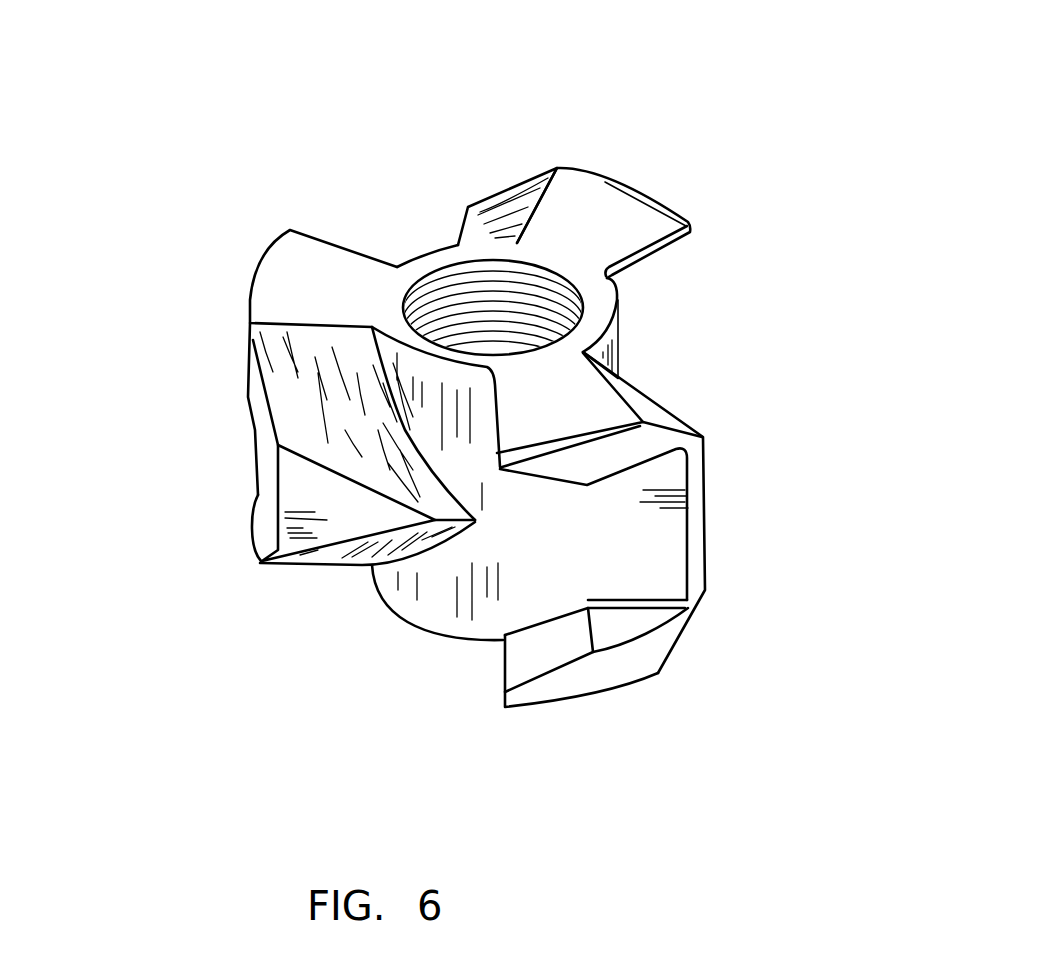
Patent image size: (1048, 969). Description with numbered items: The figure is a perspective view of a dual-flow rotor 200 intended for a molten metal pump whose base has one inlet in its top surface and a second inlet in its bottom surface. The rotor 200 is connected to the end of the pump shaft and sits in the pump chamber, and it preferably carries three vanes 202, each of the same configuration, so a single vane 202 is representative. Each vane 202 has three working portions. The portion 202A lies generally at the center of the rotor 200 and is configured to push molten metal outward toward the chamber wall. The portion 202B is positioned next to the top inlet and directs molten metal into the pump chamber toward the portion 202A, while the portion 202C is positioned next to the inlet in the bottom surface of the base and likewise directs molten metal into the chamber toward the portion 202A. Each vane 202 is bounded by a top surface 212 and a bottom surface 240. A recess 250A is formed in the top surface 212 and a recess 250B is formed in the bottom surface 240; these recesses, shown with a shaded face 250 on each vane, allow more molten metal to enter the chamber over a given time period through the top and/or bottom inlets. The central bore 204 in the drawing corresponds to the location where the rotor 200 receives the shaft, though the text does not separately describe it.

The rotor 200 is at (914, 77).
The vane 202 is at (623, 174).
The portion 202A is at (632, 551).
The portion 202B is at (538, 500).
The portion 202C is at (538, 647).
The central threaded bore 204 is at (448, 313).
The top surface 212 is at (325, 277).
The bottom surface 240 is at (254, 530).
The cutting edge face 250 is at (500, 217).
The recess 250A is at (298, 397).
The recess 250B is at (337, 556).